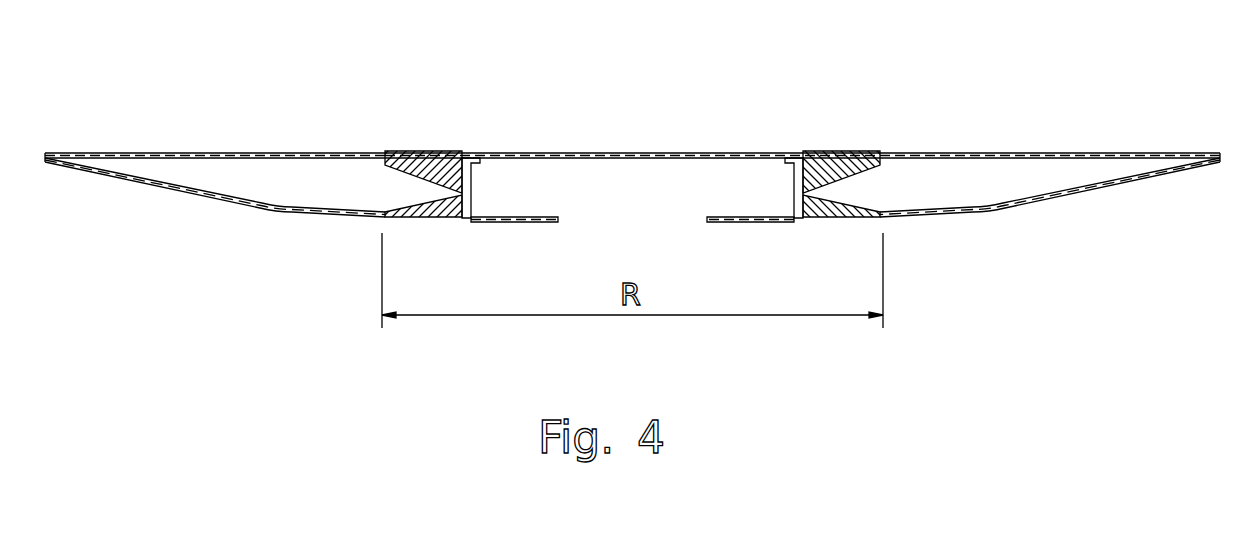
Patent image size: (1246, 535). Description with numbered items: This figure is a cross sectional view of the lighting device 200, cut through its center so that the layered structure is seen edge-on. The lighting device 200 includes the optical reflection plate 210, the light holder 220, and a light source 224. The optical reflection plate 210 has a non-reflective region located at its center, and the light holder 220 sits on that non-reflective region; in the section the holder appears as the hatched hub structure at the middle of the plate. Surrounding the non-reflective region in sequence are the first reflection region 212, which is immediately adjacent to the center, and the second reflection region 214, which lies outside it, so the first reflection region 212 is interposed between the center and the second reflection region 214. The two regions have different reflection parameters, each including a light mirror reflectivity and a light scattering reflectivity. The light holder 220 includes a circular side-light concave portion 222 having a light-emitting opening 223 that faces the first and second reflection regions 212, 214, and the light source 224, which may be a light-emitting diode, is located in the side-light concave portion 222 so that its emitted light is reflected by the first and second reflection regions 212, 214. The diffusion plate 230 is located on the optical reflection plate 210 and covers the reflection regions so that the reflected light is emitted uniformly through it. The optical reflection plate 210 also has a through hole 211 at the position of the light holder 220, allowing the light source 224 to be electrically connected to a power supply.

The lighting device 200 is at (76, 59).
The optical reflection plate 210 is at (1157, 178).
The through hole 211 is at (624, 224).
The first reflection region 212 is at (956, 193).
The second reflection region 214 is at (1137, 160).
The light holder 220 is at (686, 153).
The side-light concave portion 222 is at (445, 165).
The light-emitting opening 223 is at (389, 180).
The light source 224 is at (794, 183).
The diffusion plate 230 is at (1062, 153).